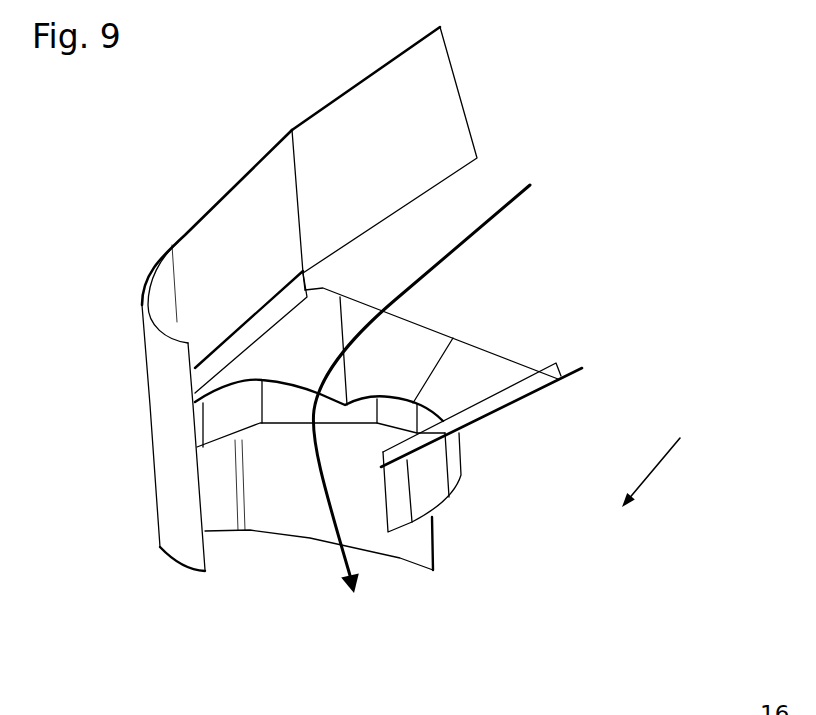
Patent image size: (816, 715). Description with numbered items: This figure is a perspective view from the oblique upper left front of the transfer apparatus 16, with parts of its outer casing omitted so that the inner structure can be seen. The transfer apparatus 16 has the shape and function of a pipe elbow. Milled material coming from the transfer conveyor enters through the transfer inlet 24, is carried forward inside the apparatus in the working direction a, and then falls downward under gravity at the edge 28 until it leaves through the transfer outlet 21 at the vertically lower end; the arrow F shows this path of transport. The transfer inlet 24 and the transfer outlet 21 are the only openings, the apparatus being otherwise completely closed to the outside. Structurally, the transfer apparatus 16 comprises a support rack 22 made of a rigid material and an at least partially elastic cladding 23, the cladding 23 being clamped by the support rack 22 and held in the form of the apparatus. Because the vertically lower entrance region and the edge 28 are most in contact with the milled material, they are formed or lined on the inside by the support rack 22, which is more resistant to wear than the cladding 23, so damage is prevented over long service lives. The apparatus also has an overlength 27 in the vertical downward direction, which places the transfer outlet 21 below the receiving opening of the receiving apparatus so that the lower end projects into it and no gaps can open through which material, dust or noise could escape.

The transfer apparatus 16 is at (550, 159).
The transfer outlet 21 is at (245, 584).
The support rack 22 is at (475, 380).
The cladding 23 is at (210, 240).
The transfer inlet 24 is at (625, 293).
The overlength 27 is at (180, 548).
The edge 28 is at (443, 420).
The arrow F is at (523, 212).
The working direction a is at (641, 485).